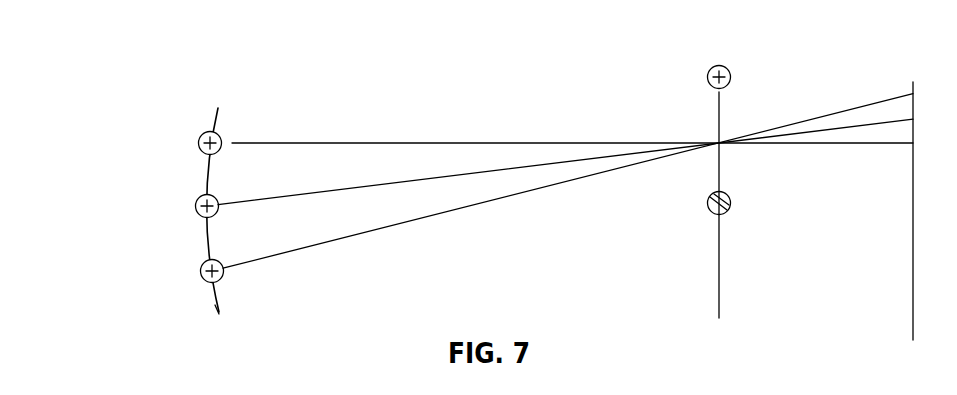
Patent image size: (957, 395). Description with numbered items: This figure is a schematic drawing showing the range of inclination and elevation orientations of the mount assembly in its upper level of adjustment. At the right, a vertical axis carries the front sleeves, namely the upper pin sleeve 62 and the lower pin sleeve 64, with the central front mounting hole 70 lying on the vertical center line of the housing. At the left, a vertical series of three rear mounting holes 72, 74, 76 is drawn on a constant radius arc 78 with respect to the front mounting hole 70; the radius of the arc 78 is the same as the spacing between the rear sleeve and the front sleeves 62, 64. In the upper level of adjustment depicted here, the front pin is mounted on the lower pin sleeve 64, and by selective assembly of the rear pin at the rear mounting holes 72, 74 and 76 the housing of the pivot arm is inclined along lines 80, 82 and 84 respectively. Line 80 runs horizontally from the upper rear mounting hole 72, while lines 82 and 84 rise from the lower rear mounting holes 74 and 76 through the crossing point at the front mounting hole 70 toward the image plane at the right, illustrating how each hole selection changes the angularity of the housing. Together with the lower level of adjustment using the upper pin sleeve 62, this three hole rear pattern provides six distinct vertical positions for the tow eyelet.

The upper pin sleeve 62 is at (730, 67).
The lower pin sleeve 64 is at (726, 211).
The central front mounting hole 70 is at (710, 212).
The rear mounting hole 72 is at (200, 138).
The rear mounting hole 74 is at (196, 206).
The rear mounting hole 76 is at (201, 270).
The constant radius arc 78 is at (218, 309).
The inclination line 80 is at (352, 143).
The inclination line 82 is at (337, 191).
The inclination line 84 is at (438, 214).